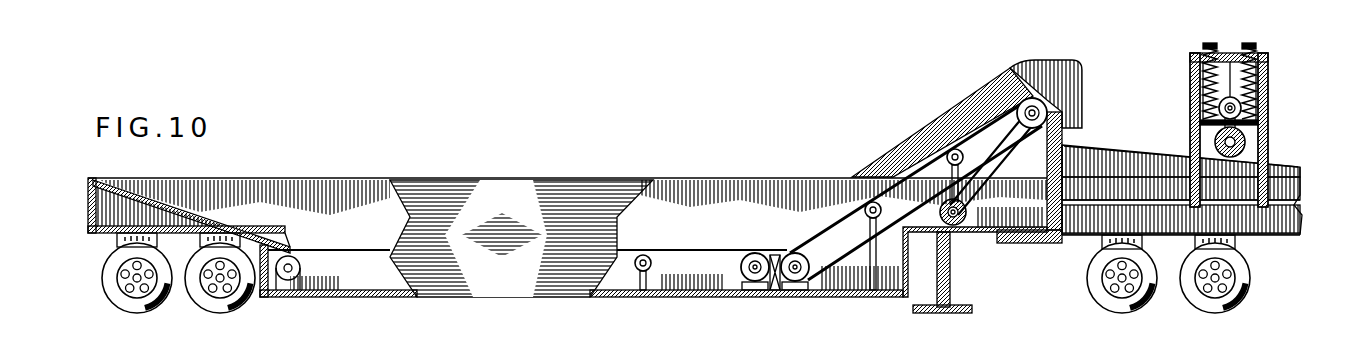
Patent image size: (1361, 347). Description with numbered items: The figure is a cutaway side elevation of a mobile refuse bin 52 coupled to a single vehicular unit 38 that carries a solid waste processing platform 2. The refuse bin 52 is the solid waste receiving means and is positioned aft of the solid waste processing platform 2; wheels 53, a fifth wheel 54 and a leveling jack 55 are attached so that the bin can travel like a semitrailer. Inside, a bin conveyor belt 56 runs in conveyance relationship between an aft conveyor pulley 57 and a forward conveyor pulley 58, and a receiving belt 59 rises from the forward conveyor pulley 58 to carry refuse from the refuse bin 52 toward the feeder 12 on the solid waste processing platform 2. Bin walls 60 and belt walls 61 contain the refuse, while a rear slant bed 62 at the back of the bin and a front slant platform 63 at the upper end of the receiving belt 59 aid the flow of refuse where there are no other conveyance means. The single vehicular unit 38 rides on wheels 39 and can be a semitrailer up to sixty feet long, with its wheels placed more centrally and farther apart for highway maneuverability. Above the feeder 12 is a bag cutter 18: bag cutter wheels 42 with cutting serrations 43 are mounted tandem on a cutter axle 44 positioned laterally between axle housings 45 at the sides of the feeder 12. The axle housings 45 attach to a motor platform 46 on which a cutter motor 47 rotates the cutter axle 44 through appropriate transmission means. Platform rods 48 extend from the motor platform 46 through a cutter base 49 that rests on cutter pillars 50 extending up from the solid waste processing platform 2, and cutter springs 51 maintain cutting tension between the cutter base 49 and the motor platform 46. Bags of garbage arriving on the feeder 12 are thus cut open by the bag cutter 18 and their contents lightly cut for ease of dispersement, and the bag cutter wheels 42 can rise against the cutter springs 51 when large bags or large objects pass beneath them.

The refuse bin 52 is at (228, 70).
The rear slant bed 62 is at (207, 213).
The bin walls 60 is at (407, 217).
The wheels 53 is at (196, 289).
The aft conveyor pulley 57 is at (282, 283).
The bin conveyor belt 56 is at (648, 312).
The forward conveyor pulley 58 is at (748, 262).
The receiving belt 59 is at (865, 312).
The belt walls 61 is at (870, 83).
The front slant platform 63 is at (1060, 108).
The fifth wheel 54 is at (1010, 243).
The leveling jack 55 is at (957, 307).
The solid waste processing platform 2 is at (1080, 233).
The single vehicular unit 38 is at (1118, 54).
The feeder 12 is at (1113, 152).
The cutting serrations 43 is at (1290, 170).
The wheels 39 is at (1195, 288).
The platform rods 48 is at (1193, 72).
The cutter springs 51 is at (1192, 52).
The cutter pillars 50 is at (1170, 240).
The cutter base 49 is at (1212, 56).
The lift assembly 18 is at (1232, 22).
The cutter motor 47 is at (1232, 97).
The motor platform 46 is at (1265, 172).
The axle housings 45 is at (1203, 118).
The bag cutter wheels 42 is at (1203, 140).
The cutter axle 44 is at (1213, 147).